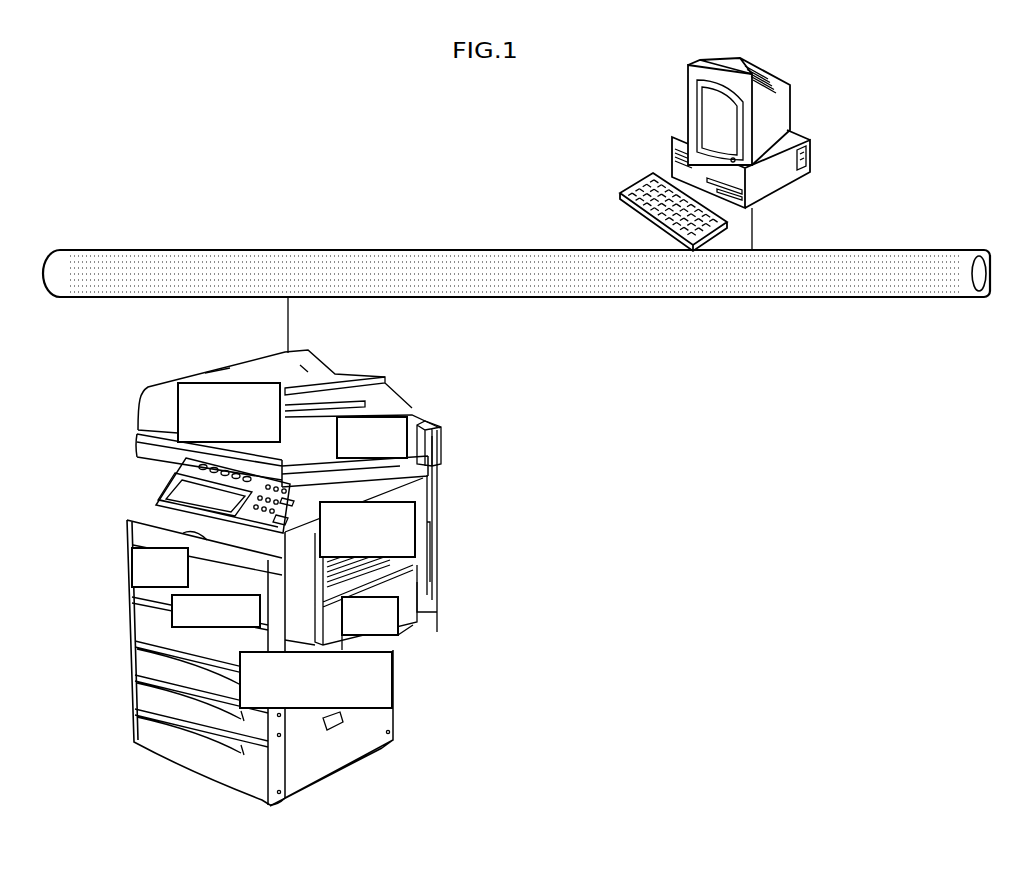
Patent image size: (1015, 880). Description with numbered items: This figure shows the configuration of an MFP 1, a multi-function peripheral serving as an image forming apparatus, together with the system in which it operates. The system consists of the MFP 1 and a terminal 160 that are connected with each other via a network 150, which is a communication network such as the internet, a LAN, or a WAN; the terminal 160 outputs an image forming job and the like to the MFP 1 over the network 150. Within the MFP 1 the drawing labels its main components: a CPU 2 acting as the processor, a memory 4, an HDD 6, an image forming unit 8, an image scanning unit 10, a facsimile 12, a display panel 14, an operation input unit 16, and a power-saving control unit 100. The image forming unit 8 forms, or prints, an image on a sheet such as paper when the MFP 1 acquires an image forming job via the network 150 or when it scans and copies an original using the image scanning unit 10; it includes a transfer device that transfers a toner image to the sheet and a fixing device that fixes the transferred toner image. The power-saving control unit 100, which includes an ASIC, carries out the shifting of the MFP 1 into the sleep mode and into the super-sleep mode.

The MFP (multi-function peripheral) 1 is at (284, 589).
The CPU 2 is at (130, 563).
The memory 4 is at (172, 615).
The HDD (hard disk drive) 6 is at (400, 627).
The image forming unit 8 is at (408, 522).
The image scanning unit 10 is at (178, 393).
The facsimile 12 is at (441, 441).
The display panel 14 is at (197, 485).
The operation input unit 16 is at (136, 451).
The power-saving control unit 100 is at (392, 708).
The network 150 is at (881, 298).
The terminal 160 is at (812, 150).